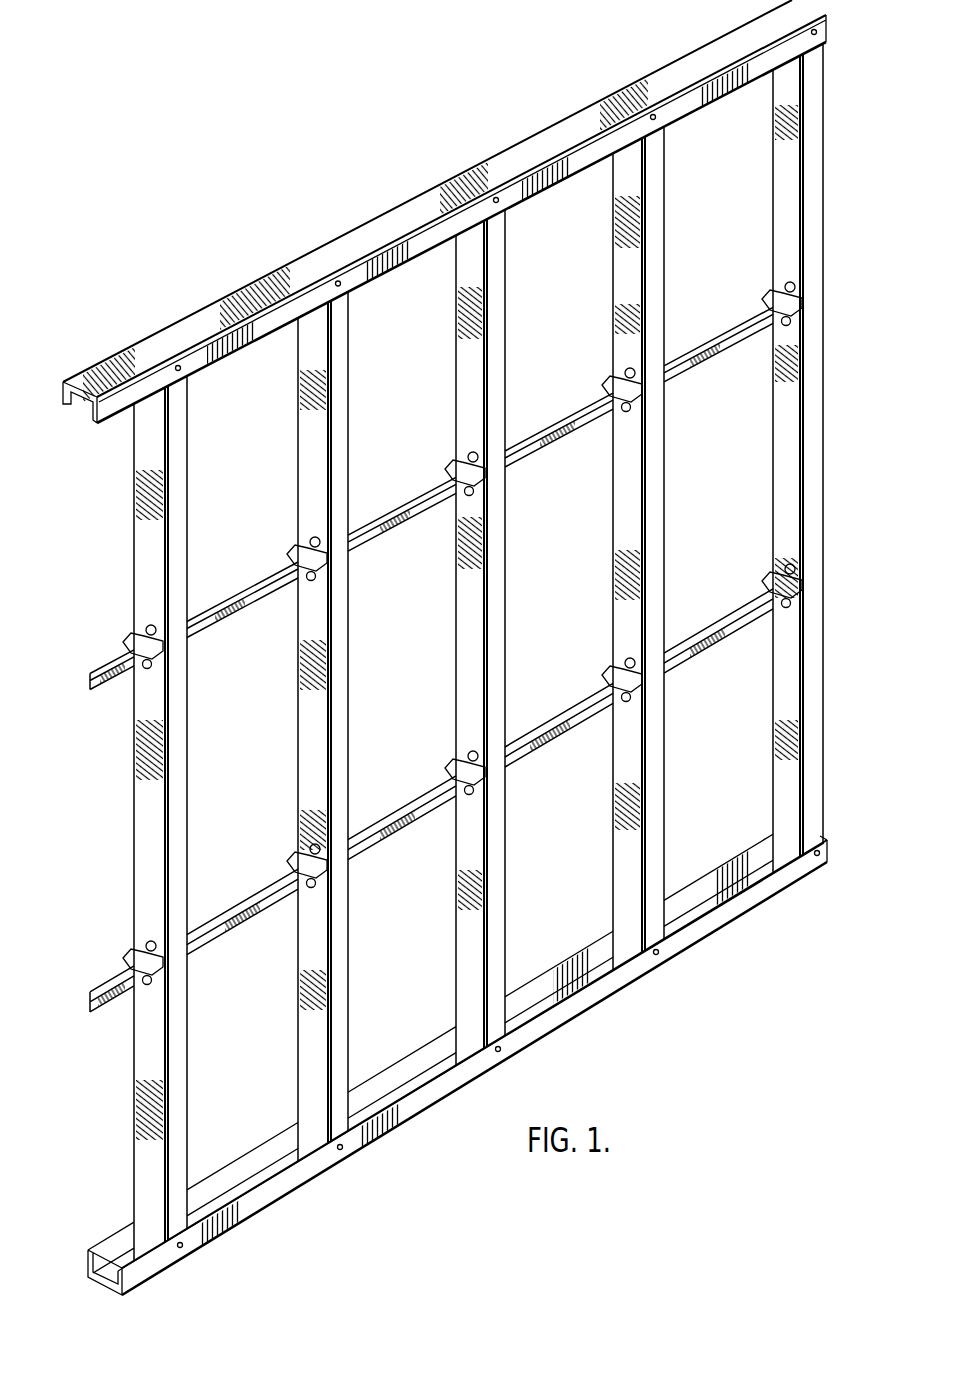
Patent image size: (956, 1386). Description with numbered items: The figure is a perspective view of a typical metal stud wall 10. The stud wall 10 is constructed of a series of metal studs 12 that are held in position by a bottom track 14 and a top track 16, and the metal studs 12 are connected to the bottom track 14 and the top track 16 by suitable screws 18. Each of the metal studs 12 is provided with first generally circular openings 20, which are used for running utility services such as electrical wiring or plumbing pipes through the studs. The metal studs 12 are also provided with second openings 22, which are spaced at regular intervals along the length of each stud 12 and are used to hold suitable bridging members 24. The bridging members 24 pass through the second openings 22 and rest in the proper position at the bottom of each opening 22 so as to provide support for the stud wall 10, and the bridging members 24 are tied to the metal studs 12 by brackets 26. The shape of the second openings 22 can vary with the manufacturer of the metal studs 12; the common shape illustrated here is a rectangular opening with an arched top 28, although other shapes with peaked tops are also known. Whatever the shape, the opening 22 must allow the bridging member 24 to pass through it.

The metal stud wall 10 is at (262, 250).
The metal stud 12 is at (820, 213).
The bottom track 14 is at (727, 905).
The top track 16 is at (583, 118).
The screw 18 is at (503, 200).
The first generally circular opening 20 is at (782, 622).
The second opening 22 is at (782, 576).
The bridging member 24 is at (696, 660).
The bracket 26 is at (781, 283).
The arched top 28 is at (624, 666).